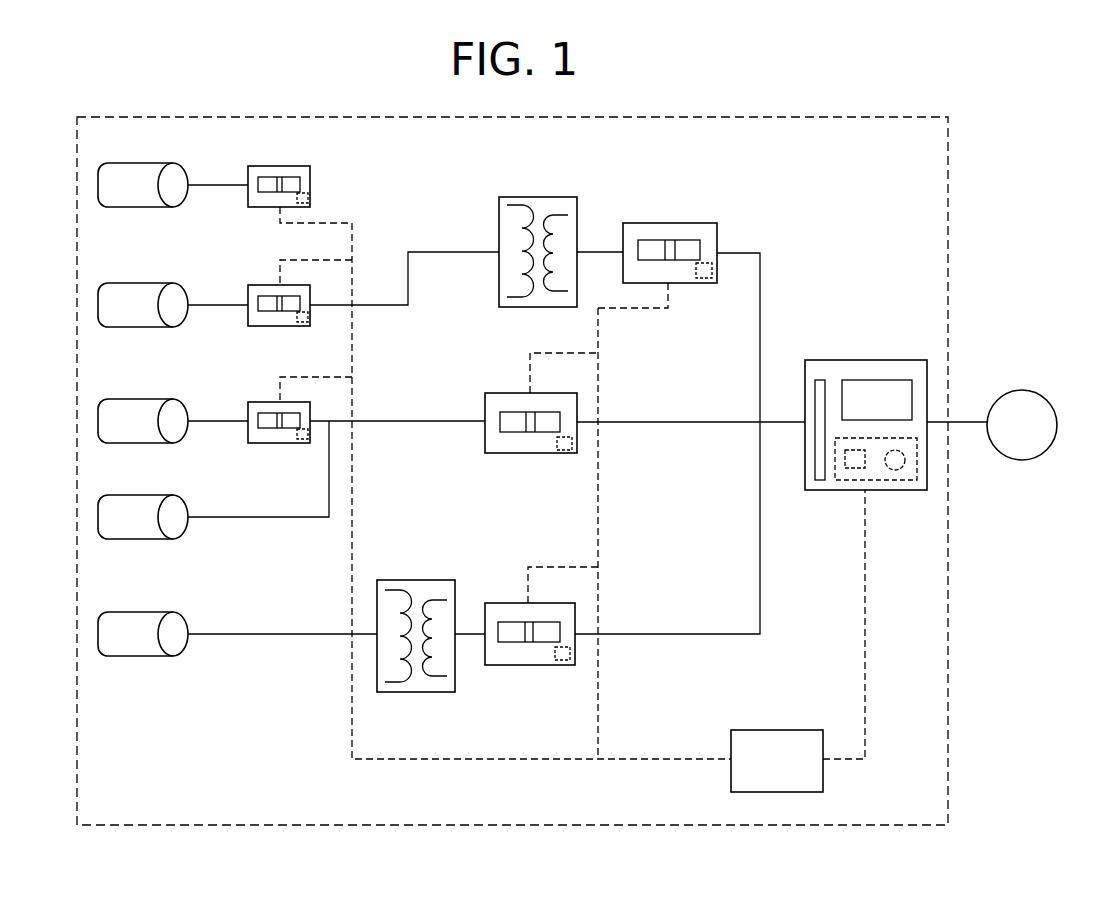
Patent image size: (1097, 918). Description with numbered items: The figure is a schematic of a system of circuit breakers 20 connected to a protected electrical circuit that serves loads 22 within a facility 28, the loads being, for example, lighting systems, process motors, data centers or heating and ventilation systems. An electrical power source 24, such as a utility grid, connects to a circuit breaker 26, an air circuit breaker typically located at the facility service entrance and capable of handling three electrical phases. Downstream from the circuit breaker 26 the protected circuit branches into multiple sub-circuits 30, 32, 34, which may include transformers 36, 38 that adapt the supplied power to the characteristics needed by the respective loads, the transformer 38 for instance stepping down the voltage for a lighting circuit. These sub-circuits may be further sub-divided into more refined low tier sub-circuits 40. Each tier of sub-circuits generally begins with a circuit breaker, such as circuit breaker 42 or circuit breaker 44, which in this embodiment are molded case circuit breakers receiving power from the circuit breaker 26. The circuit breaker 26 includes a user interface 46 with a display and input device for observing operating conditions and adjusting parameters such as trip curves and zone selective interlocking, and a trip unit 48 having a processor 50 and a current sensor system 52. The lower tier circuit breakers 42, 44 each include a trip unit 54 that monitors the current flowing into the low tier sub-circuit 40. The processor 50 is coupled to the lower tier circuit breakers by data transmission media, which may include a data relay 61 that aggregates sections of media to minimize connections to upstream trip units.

The system of circuit breakers 20 is at (964, 204).
The loads 22 is at (123, 207).
The electrical power source 24 is at (1020, 391).
The circuit breaker 26 is at (888, 428).
The facility 28 is at (777, 116).
The sub-circuit 30 is at (744, 207).
The sub-circuit 32 is at (624, 469).
The sub-circuit 34 is at (742, 664).
The transformer 36 is at (445, 580).
The transformer 38 is at (568, 197).
The low tier sub-circuit 40 is at (368, 201).
The circuit breaker 42 is at (658, 223).
The circuit breaker 44 is at (255, 166).
The user interface 46 is at (893, 380).
The trip unit 48 is at (915, 468).
The processor 50 is at (850, 470).
The current sensor system 52 is at (898, 469).
The trip unit 54 is at (309, 200).
The data relay 61 is at (823, 777).